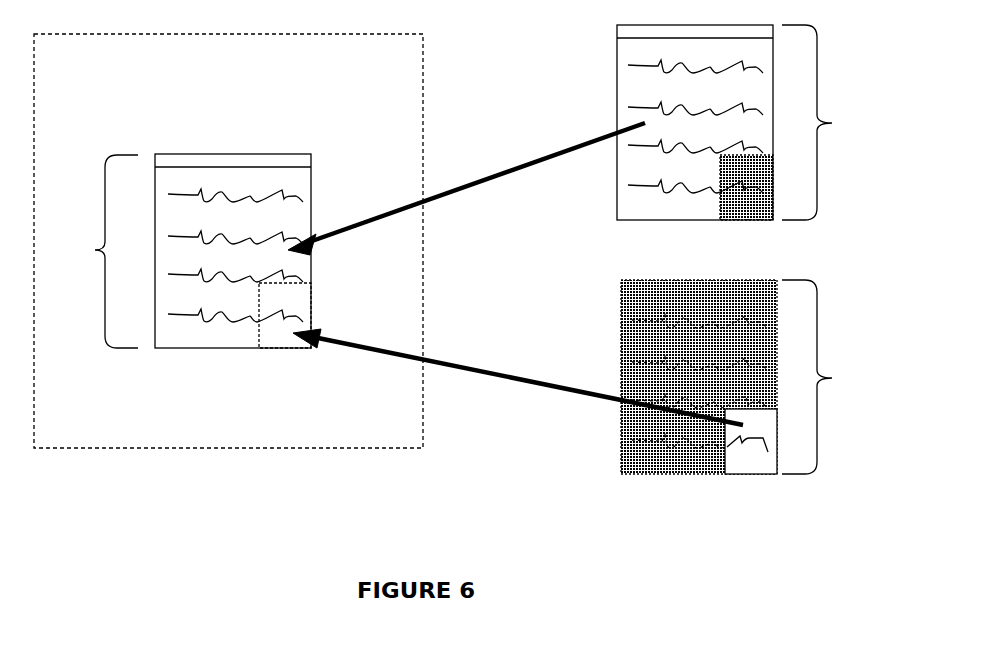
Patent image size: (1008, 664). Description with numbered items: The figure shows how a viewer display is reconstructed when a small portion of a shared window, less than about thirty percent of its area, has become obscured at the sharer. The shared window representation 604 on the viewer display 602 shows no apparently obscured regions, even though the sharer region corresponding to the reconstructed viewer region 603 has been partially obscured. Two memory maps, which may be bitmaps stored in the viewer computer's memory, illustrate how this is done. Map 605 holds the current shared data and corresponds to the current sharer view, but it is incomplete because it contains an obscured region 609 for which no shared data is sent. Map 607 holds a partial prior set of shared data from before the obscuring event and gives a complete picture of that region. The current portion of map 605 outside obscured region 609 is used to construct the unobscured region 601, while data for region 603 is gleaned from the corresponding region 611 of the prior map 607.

The unobscured region 601 is at (300, 215).
The viewer display 602 is at (438, 58).
The reconstructed viewer region 603 is at (298, 300).
The shared window representation 604 is at (95, 251).
The memory map 605 is at (749, 122).
The memory map 607 is at (752, 377).
The obscured region 609 is at (748, 190).
The region of prior map 611 is at (745, 448).